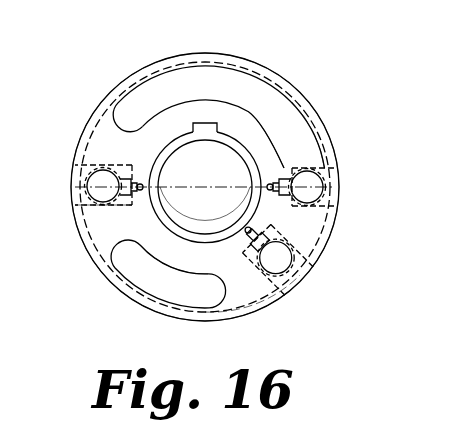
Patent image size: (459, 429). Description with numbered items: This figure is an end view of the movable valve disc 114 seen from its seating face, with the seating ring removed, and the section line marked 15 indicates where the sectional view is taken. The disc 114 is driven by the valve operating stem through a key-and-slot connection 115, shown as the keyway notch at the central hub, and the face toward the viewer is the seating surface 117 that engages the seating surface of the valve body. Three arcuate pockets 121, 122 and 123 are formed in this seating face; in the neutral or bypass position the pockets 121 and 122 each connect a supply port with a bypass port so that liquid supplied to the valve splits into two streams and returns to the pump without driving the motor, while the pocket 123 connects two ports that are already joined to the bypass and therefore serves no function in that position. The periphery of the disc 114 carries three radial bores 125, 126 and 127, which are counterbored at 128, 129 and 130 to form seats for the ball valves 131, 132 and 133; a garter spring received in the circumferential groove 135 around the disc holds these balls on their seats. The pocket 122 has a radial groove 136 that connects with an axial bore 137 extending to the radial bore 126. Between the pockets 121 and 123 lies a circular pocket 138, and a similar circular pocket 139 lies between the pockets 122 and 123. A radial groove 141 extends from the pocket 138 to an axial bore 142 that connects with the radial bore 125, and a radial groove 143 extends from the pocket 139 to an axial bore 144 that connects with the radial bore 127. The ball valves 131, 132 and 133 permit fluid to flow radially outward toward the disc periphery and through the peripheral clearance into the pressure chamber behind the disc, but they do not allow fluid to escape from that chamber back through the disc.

The section line 15- 15 is at (72, 187).
The valve disc 114 is at (132, 73).
The key-and-slot connection 115 is at (213, 129).
The seating surface 117 is at (262, 298).
The arcuate pocket 121 is at (197, 62).
The arcuate pocket 122 is at (312, 124).
The arcuate pocket 123 is at (160, 302).
The radial bore 125 is at (128, 203).
The radial bore 126 is at (284, 167).
The radial bore 127 is at (243, 255).
The counterbore 128 is at (99, 170).
The counterbore 129 is at (325, 249).
The counterbore 130 is at (265, 284).
The ball valve 131 is at (85, 182).
The ball valve 132 is at (327, 163).
The ball valve 133 is at (297, 266).
The circumferential groove 135 is at (263, 77).
The radial groove 136 is at (281, 197).
The axial bore 137 is at (262, 176).
The circular pocket 138 is at (103, 206).
The circular pocket 139 is at (281, 284).
The radial groove 141 is at (131, 206).
The axial bore 142 is at (154, 183).
The radial groove 143 is at (273, 233).
The axial bore 144 is at (247, 225).